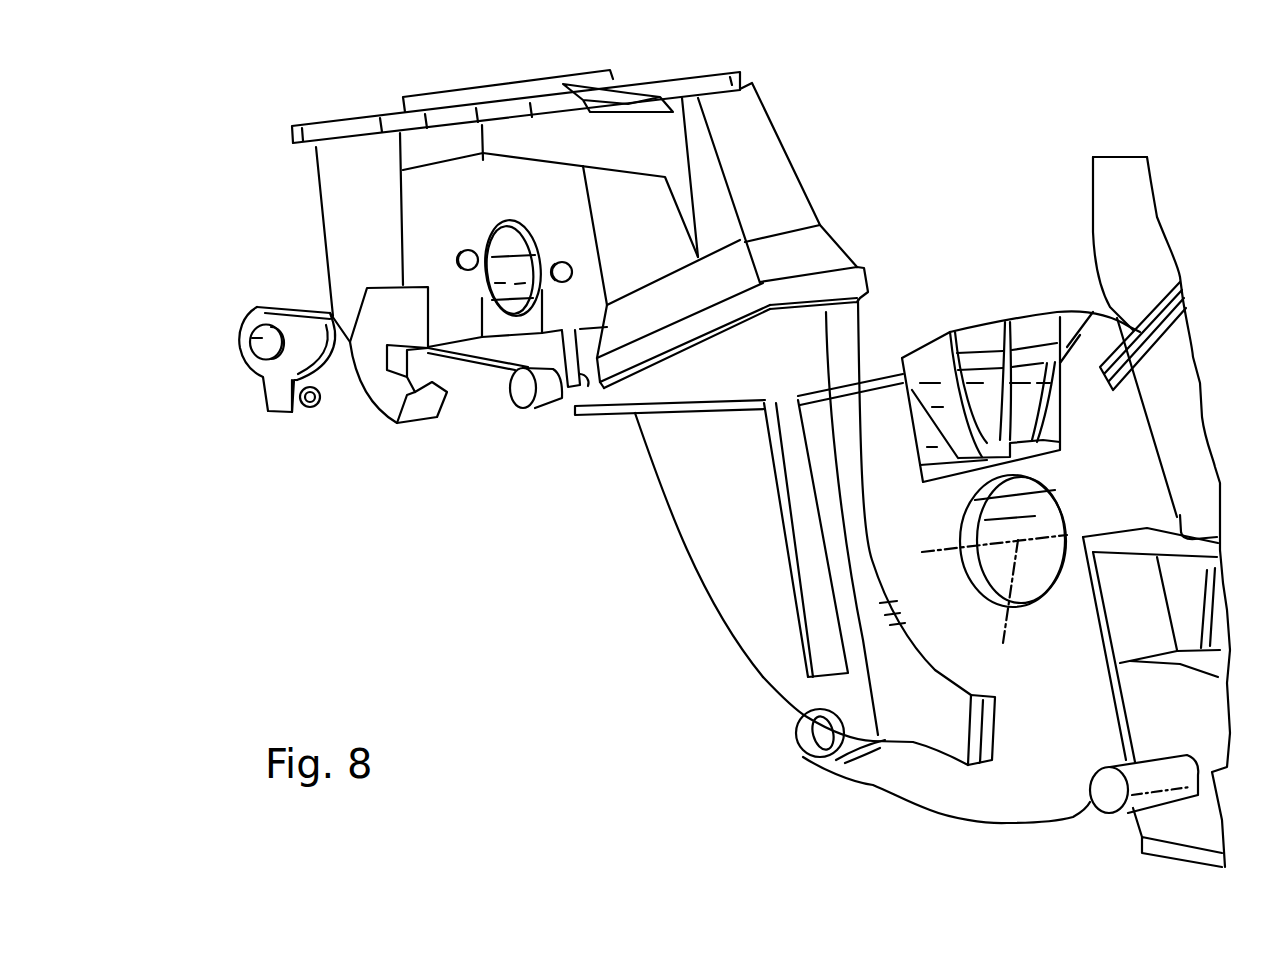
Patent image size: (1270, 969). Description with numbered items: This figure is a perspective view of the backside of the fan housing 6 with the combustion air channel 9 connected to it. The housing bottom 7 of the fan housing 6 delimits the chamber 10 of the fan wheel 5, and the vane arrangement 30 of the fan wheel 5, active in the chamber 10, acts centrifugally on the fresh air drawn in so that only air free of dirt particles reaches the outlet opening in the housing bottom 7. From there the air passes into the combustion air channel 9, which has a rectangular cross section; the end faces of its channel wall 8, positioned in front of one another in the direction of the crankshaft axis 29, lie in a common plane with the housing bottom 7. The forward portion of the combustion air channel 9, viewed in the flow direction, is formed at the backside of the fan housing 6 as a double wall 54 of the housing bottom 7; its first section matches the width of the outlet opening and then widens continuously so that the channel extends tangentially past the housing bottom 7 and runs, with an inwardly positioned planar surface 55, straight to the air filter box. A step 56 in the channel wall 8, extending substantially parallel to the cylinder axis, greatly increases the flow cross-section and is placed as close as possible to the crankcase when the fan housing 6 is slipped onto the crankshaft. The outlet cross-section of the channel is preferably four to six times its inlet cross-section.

The fan wheel 5 is at (1020, 307).
The fan housing 6 is at (1057, 822).
The housing bottom 7 is at (1066, 738).
The channel wall 8 is at (714, 573).
The combustion air channel 9 is at (645, 498).
The chamber 10 is at (1023, 393).
The crankshaft axis 29 is at (994, 577).
The vane arrangement 30 is at (940, 383).
The double wall 54 is at (947, 720).
The planar surface 55 is at (823, 347).
The step 56 is at (887, 702).